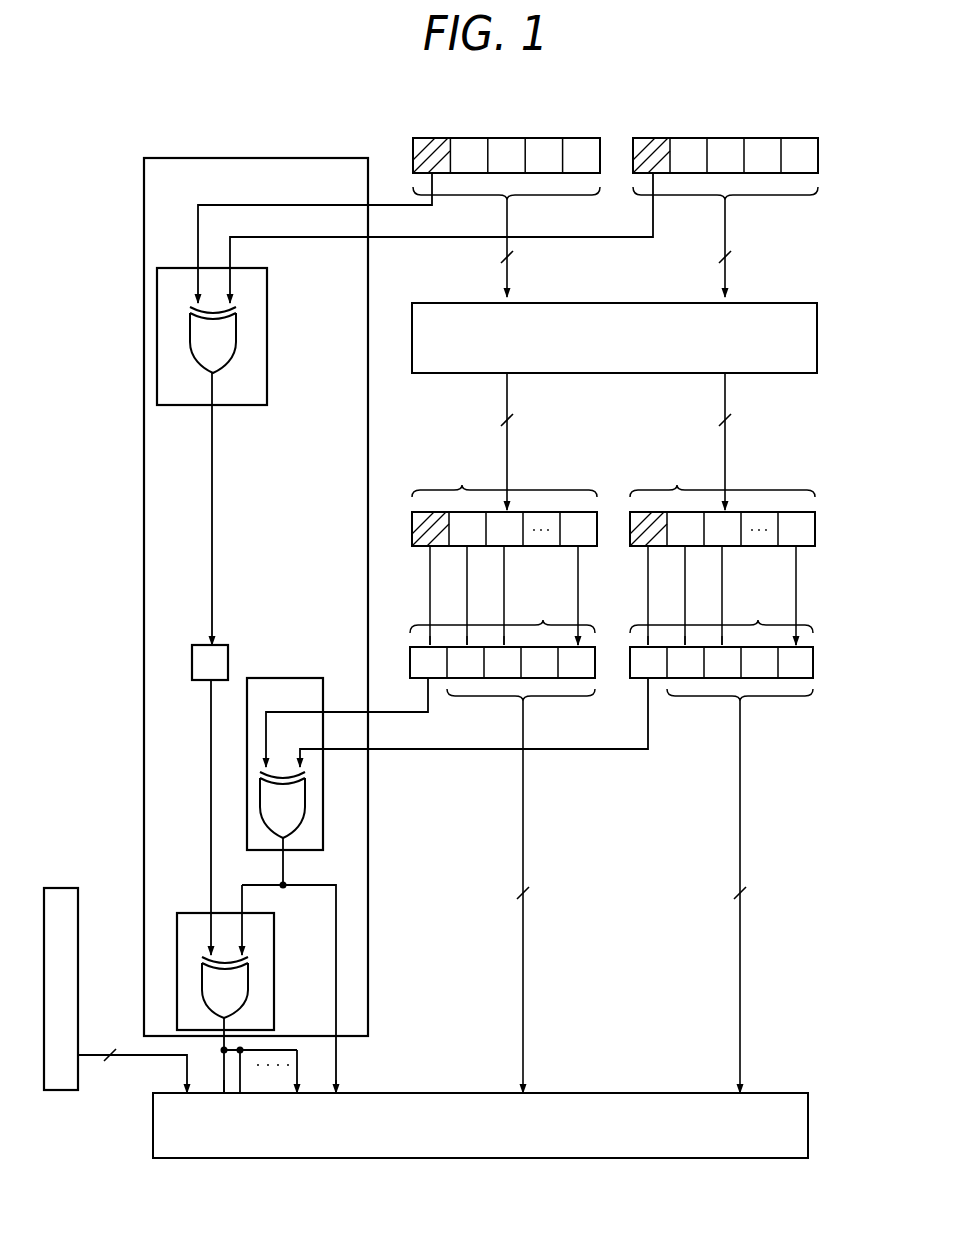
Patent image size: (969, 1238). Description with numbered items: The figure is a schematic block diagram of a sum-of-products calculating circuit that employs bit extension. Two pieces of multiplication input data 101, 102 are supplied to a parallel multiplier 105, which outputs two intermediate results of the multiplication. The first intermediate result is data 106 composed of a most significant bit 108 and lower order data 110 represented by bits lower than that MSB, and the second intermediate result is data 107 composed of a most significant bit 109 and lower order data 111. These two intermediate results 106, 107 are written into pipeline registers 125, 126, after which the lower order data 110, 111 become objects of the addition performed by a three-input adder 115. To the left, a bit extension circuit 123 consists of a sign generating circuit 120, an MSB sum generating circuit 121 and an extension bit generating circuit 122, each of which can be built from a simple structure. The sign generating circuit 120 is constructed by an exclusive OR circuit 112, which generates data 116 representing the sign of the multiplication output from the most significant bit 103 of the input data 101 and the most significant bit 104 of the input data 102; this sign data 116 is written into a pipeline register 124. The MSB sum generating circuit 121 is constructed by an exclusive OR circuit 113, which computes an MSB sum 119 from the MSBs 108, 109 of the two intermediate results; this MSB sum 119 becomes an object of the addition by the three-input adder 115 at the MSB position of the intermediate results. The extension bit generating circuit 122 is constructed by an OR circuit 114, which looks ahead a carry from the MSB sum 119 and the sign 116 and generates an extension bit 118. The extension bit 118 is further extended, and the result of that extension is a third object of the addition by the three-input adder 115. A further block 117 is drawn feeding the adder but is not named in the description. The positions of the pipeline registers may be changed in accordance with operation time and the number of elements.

The multiplication input data 101 is at (537, 197).
The multiplication input data 102 is at (762, 197).
The most significant bit of multiplication input data 101 103 is at (428, 138).
The most significant bit of multiplication input data 102 104 is at (649, 138).
The parallel multiplier 105 is at (800, 303).
The first intermediate result data 106 is at (504, 503).
The second intermediate result data 107 is at (722, 503).
The most significant bit of data 106 108 is at (410, 520).
The most significant bit of data 107 109 is at (630, 520).
The lower order data 110 is at (556, 698).
The lower order data 111 is at (775, 698).
The exclusive OR circuit 112 is at (236, 329).
The exclusive OR circuit 113 is at (305, 812).
The OR circuit 114 is at (248, 975).
The three-input adder 115 is at (784, 1160).
The sign data of multiplication output 116 is at (212, 497).
The constant register 117 is at (78, 903).
The extension bit 118 is at (226, 1023).
The MSB sum 119 is at (283, 867).
The sign generating circuit 120 is at (267, 281).
The MSB sum generating circuit 121 is at (322, 678).
The extension bit generating circuit 122 is at (188, 913).
The bit extension circuit 123 is at (144, 172).
The pipeline register 124 is at (192, 650).
The pipeline register 125 is at (502, 595).
The pipeline register 126 is at (721, 595).